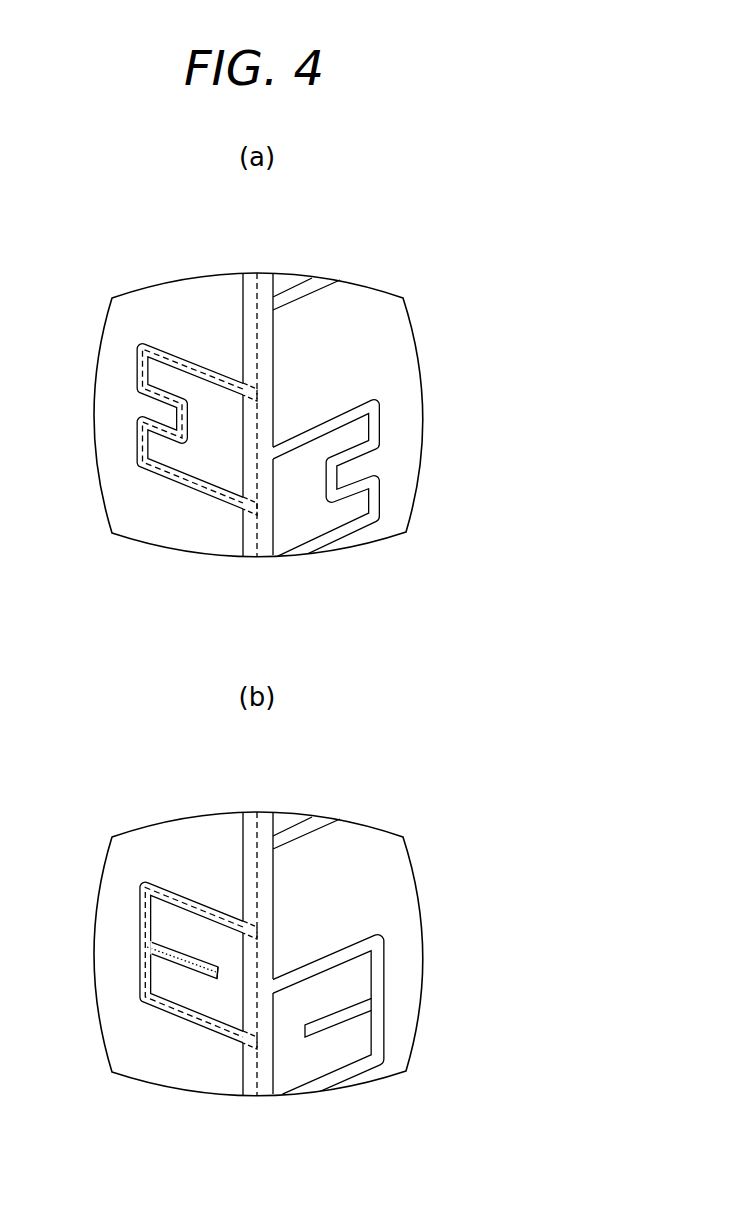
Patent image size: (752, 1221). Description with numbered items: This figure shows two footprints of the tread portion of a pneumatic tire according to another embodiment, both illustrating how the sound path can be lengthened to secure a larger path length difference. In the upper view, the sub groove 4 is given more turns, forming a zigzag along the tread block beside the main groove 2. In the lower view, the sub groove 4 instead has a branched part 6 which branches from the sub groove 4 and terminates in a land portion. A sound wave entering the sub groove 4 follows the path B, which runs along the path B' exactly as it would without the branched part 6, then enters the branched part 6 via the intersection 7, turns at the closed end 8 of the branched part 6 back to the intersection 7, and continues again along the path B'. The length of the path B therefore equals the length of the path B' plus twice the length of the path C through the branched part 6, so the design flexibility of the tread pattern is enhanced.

The main groove 2 is at (252, 282).
The sub groove 4 is at (142, 342).
The path of the sound wave B is at (303, 256).
The path B' is at (306, 795).
The branched part 6 is at (185, 960).
The intersection 7 is at (147, 946).
The closed end 8 is at (219, 978).
The path C is at (183, 973).